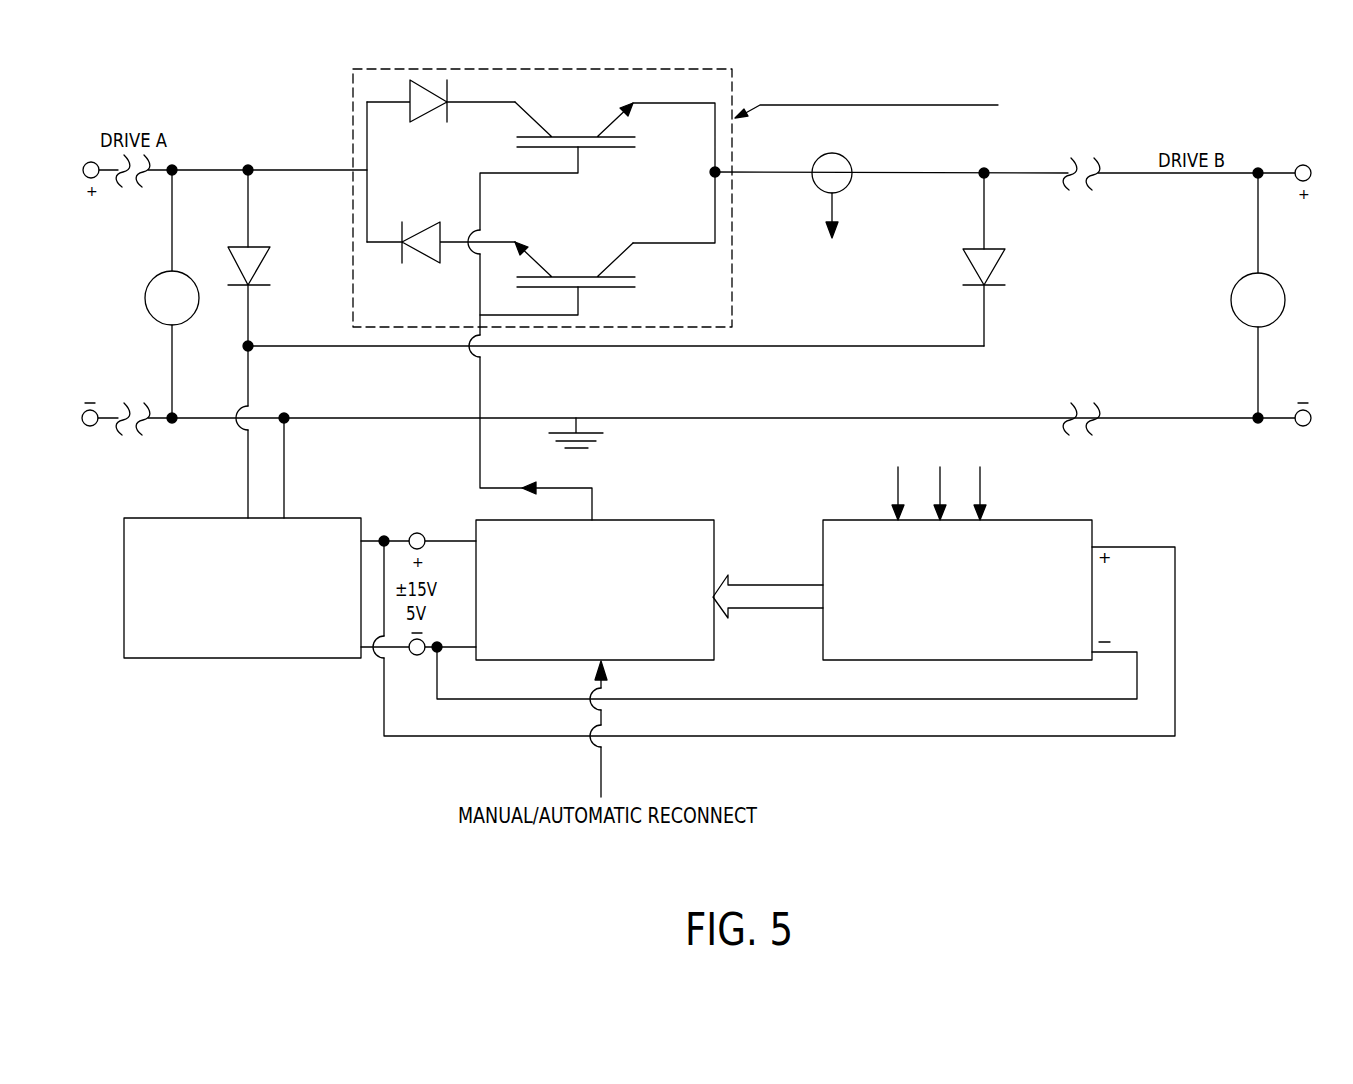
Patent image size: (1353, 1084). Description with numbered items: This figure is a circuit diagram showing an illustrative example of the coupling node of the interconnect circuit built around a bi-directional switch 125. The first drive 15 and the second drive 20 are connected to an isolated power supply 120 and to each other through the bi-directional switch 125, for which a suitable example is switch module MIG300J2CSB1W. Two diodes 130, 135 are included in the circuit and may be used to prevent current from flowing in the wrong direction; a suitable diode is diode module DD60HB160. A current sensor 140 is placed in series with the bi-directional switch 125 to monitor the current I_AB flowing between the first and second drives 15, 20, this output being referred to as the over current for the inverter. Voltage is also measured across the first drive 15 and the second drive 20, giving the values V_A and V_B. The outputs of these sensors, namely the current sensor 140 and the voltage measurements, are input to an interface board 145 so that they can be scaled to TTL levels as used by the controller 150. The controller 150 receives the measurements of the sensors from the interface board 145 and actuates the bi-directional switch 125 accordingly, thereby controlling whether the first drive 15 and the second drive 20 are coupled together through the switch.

The first drive 15 is at (147, 282).
The second drive 20 is at (1280, 282).
The isolated power supply 120 is at (337, 517).
The bi-directional switch 125 is at (348, 80).
The diode 130 is at (1000, 258).
The diode 135 is at (266, 258).
The current sensor 140 is at (846, 158).
The interface board 145 is at (1047, 518).
The controller 150 is at (699, 518).